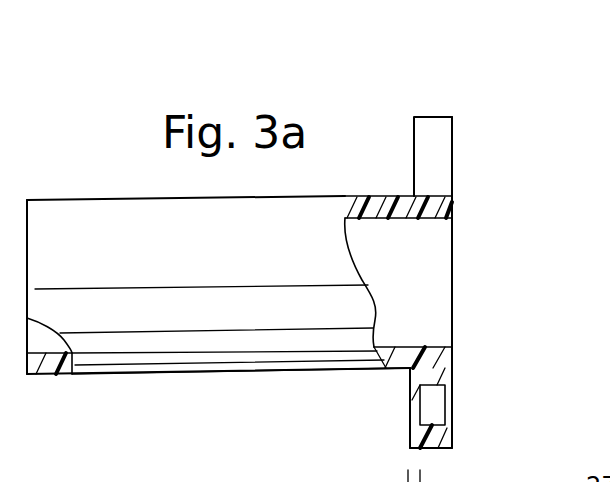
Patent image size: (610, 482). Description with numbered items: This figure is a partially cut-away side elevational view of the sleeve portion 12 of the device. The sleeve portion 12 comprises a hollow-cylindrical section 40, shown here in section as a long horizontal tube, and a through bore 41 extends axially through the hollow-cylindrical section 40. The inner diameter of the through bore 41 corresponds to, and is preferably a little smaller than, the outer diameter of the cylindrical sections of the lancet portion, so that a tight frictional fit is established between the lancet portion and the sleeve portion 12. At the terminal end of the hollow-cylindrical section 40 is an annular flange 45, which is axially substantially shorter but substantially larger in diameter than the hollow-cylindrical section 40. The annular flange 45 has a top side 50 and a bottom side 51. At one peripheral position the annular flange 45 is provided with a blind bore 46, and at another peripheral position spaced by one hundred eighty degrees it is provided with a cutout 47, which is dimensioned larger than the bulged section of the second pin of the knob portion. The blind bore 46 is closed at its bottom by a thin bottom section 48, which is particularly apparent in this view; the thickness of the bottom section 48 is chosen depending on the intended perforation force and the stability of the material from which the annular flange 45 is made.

The sleeve portion 12 is at (100, 192).
The hollow-cylindrical section 40 is at (160, 373).
The through bore 41 is at (419, 349).
The annular flange 45 is at (433, 388).
The blind bore 46 is at (438, 426).
The cutout 47 is at (437, 158).
The bottom section 48 is at (411, 413).
The top side 50 is at (453, 228).
The bottom side 51 is at (402, 160).